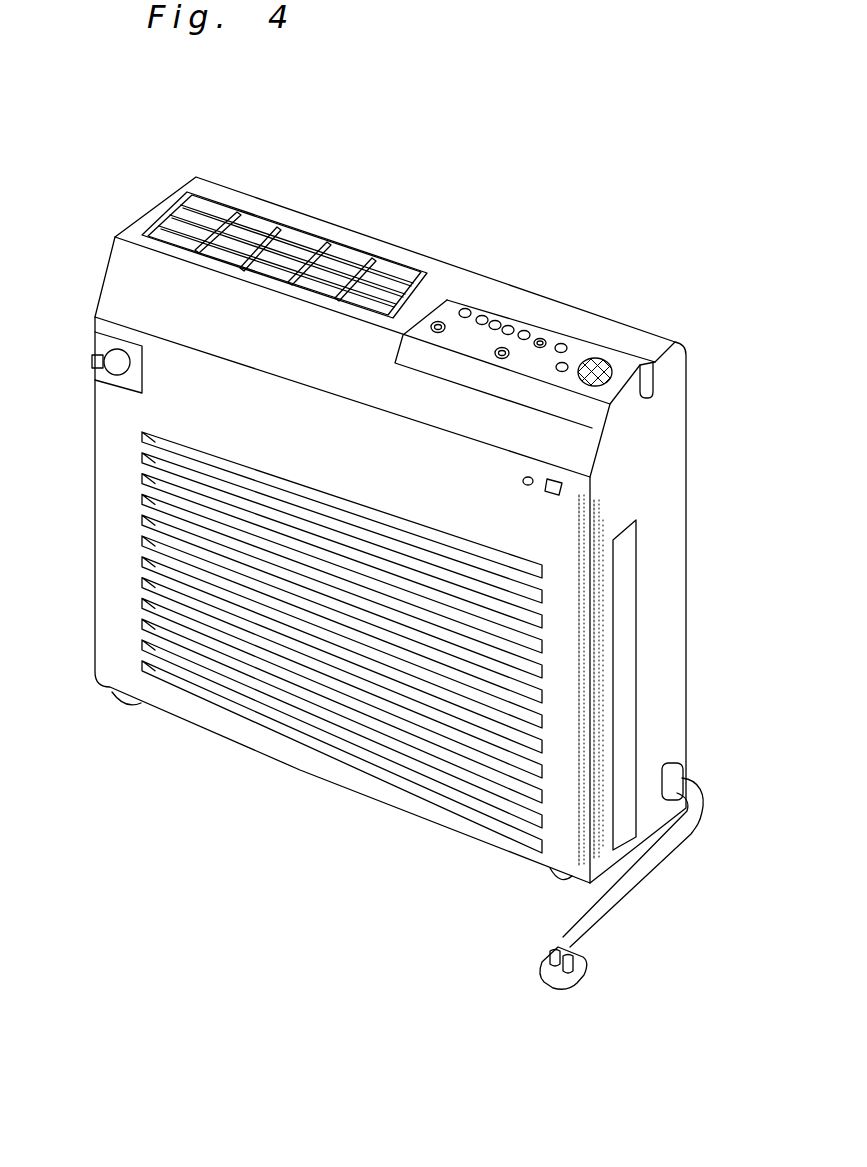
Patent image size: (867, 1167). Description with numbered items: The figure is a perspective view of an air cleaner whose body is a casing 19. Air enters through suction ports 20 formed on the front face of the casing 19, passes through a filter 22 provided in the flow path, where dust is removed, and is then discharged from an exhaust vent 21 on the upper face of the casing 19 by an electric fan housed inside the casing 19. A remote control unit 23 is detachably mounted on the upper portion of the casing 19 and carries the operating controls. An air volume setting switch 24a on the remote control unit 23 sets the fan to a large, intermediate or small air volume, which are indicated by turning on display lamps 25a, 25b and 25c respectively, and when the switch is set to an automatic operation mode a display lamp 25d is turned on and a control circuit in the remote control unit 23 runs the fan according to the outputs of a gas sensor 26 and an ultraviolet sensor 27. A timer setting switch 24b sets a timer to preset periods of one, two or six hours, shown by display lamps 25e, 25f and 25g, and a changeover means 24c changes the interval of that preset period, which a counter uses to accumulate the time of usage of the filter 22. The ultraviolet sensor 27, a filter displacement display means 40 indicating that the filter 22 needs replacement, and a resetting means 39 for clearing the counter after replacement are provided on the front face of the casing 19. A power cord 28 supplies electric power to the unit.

The casing 19 is at (348, 770).
The suction ports 20 is at (233, 677).
The exhaust vent 21 is at (345, 252).
The filter 22 is at (636, 638).
The remote control unit 23 is at (463, 308).
The air volume setting switch 24a is at (438, 321).
The timer setting switch 24b is at (495, 356).
The changeover means 24c is at (566, 372).
The display lamp 25a is at (482, 315).
The display lamp 25b is at (497, 320).
The display lamp 25c is at (511, 325).
The display lamp 25d is at (527, 330).
The display lamp 25e is at (545, 338).
The display lamp 25f is at (536, 348).
The display lamp 25g is at (558, 353).
The gas sensor 26 is at (612, 363).
The ultraviolet sensor 27 is at (115, 355).
The power cord 28 is at (622, 900).
The resetting means 39 is at (568, 486).
The filter displacement display means 40 is at (532, 477).